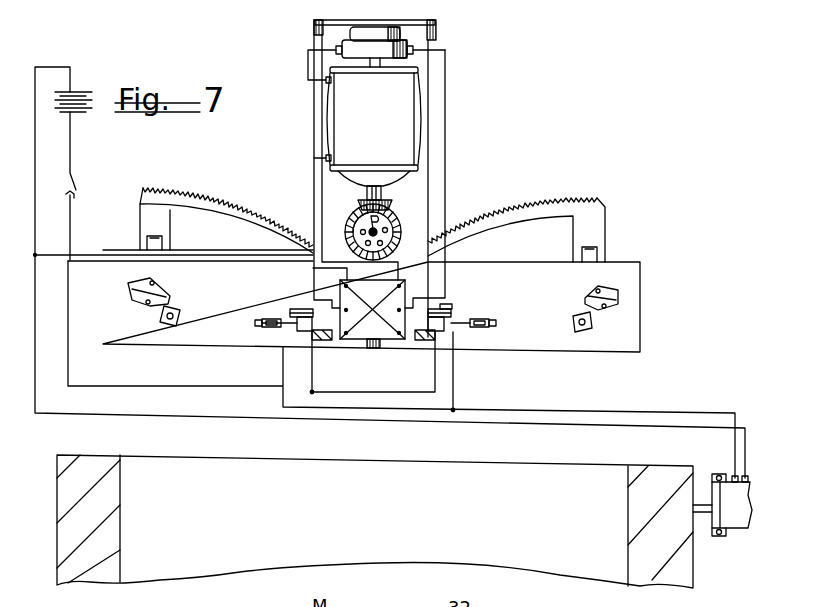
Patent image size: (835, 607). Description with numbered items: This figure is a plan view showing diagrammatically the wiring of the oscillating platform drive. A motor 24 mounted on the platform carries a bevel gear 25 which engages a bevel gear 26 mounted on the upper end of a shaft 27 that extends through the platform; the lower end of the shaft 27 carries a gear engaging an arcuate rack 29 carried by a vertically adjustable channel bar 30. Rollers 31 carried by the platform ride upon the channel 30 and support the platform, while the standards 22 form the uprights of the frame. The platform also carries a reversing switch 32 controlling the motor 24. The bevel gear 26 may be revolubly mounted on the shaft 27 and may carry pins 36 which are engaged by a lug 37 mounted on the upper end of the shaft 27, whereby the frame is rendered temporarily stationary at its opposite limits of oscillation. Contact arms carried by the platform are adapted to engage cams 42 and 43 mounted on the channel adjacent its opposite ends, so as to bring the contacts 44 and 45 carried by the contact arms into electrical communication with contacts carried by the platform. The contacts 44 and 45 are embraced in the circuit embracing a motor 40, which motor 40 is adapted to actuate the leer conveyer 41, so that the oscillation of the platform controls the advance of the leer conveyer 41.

The standards 22 is at (445, 28).
The motor 24 is at (403, 125).
The bevel gear 25 is at (395, 202).
The pins 36 is at (395, 215).
The bevel gear 26 is at (403, 232).
The lug 37 is at (366, 220).
The shaft 27 is at (350, 229).
The channel bar 30 is at (218, 290).
The arcuate rack 29 is at (563, 222).
The reversing switch 32 is at (363, 323).
The contact 44 is at (302, 333).
The contact 45 is at (438, 333).
The rollers 31 is at (456, 316).
The cam 42 is at (142, 293).
The cam 43 is at (620, 296).
The leer conveyer 41 is at (375, 521).
The motor 40 is at (737, 512).